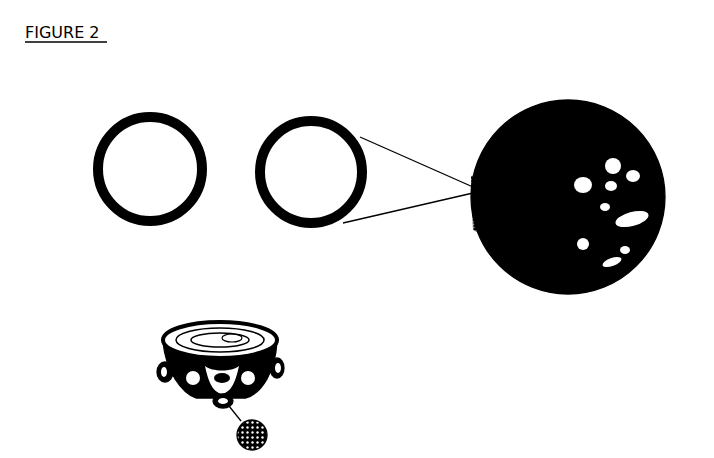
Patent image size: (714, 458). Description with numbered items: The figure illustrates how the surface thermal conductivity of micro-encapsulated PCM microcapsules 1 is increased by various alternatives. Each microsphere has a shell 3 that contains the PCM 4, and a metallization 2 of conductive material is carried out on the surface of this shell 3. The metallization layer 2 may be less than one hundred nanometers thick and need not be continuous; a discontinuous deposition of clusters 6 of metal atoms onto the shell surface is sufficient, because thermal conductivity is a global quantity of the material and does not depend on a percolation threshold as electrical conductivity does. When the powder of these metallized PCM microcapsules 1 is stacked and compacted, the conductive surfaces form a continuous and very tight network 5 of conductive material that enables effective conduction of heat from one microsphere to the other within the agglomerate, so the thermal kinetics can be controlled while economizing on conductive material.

The micro-encapsulated PCM microcapsules 1 is at (204, 244).
The metallization layer 2 is at (295, 228).
The shell 3 is at (283, 123).
The PCM 4 is at (287, 190).
The continuous network of conductive material 5 is at (577, 294).
The clusters of metal atoms 6 is at (268, 435).